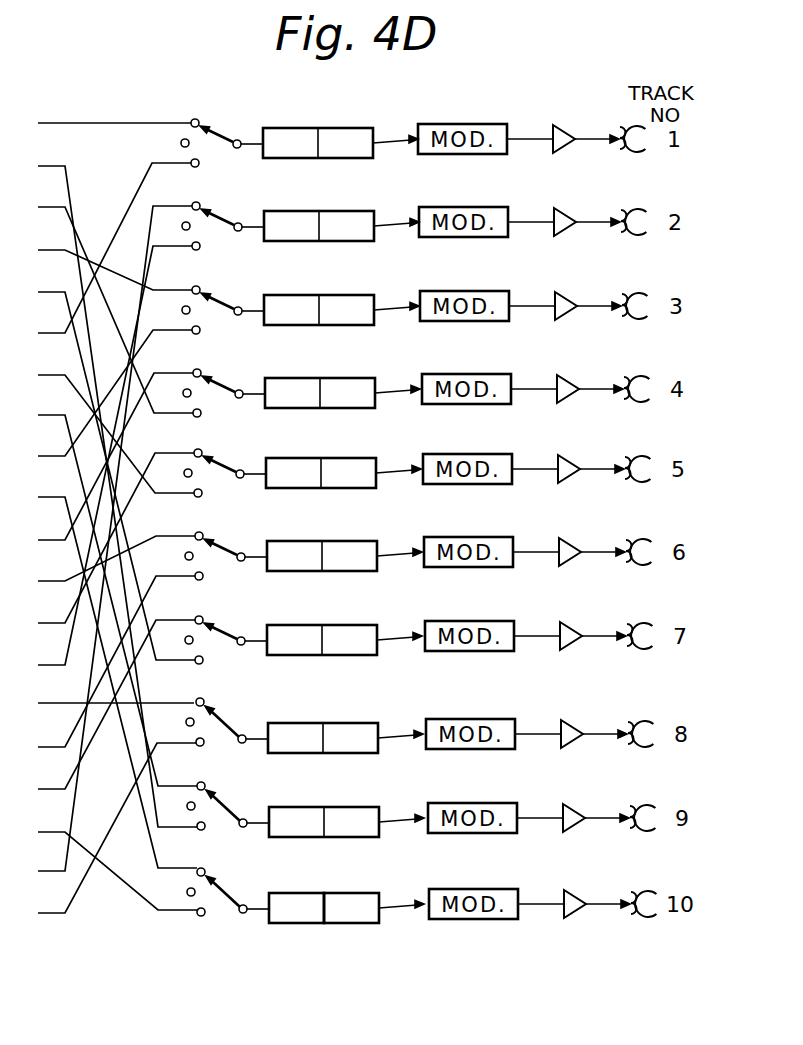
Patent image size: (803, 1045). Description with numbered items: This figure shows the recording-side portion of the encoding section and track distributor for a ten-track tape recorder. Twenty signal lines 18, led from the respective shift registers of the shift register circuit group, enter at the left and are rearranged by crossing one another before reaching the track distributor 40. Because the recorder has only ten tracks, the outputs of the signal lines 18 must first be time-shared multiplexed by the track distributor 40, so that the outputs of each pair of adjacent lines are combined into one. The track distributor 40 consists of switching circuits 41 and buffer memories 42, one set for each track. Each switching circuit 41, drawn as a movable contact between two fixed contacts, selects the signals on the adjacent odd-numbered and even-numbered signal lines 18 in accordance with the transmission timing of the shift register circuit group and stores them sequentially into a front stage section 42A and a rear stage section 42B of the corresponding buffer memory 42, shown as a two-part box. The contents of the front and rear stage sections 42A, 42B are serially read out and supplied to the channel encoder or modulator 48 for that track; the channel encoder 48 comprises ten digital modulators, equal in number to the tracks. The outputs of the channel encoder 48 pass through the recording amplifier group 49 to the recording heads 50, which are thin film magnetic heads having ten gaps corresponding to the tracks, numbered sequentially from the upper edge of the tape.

The signal lines 18 is at (101, 912).
The switching circuit 41 is at (212, 913).
The track distributor 40 is at (451, 932).
The buffer memory 42 is at (335, 918).
The front stage section 42A is at (348, 907).
The rear stage section 42B is at (290, 910).
The channel encoder 48 is at (461, 930).
The recording amplifier group 49 is at (567, 928).
The recording heads 50 is at (617, 928).